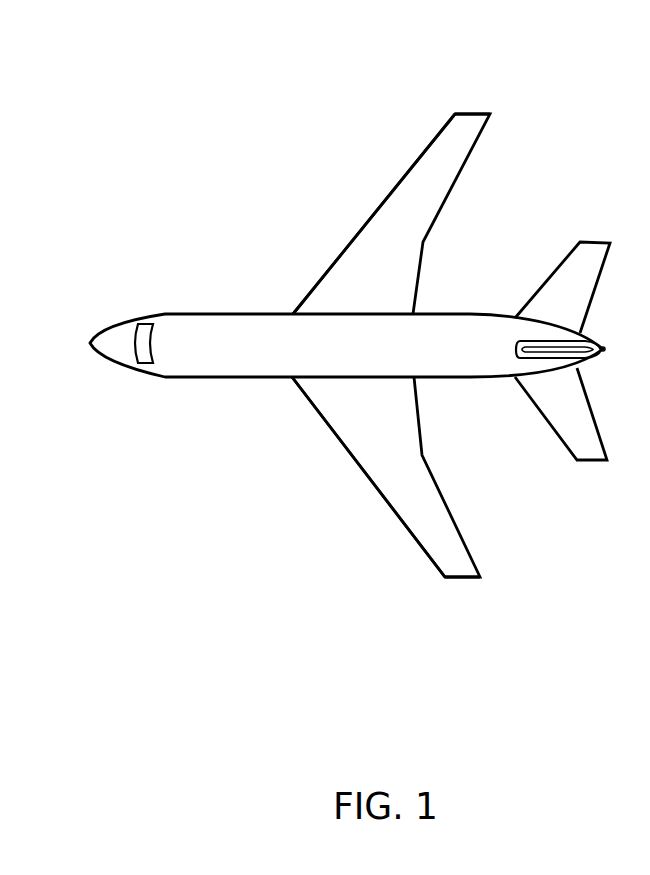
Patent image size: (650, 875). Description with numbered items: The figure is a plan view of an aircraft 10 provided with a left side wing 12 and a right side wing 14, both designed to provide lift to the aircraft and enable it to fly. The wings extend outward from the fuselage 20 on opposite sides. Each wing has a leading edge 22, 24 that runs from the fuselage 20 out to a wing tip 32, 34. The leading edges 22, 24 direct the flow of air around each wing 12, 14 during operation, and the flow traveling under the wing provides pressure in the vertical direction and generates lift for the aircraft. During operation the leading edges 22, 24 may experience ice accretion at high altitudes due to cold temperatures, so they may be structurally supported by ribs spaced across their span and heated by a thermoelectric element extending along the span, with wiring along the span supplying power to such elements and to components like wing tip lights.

The aircraft 10 is at (155, 168).
The left side wing 12 is at (403, 505).
The right side wing 14 is at (353, 300).
The fuselage 20 is at (246, 362).
The leading edge 22 is at (350, 457).
The leading edge 24 is at (358, 227).
The wing tip 32 is at (462, 577).
The wing tip 34 is at (457, 112).